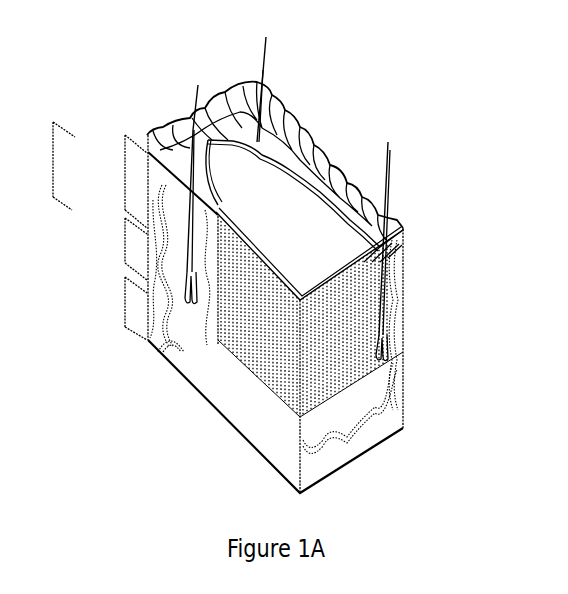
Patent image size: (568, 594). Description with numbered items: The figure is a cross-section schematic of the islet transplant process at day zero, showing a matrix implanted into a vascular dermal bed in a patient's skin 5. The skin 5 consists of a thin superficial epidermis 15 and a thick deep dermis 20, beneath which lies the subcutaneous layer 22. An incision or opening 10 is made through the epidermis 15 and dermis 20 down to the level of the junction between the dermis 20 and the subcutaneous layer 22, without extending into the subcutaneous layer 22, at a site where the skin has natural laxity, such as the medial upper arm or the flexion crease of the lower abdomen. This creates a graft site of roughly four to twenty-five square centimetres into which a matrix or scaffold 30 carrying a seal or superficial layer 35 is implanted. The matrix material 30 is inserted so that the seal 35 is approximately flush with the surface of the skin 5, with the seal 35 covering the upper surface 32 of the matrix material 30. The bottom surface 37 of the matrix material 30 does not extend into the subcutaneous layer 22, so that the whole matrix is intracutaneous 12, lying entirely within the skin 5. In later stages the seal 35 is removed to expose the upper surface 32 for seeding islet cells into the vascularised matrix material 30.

The skin 5 is at (285, 108).
The incision or opening 10 is at (338, 162).
The intracutaneous 12 is at (53, 162).
The epidermis 15 is at (125, 178).
The dermis 20 is at (125, 237).
The subcutaneous layer 22 is at (125, 295).
The matrix or scaffold 30 is at (337, 350).
The upper surface of the matrix material 32 is at (337, 285).
The seal or superficial layer 35 is at (401, 229).
The bottom surface of the matrix material 37 is at (260, 380).